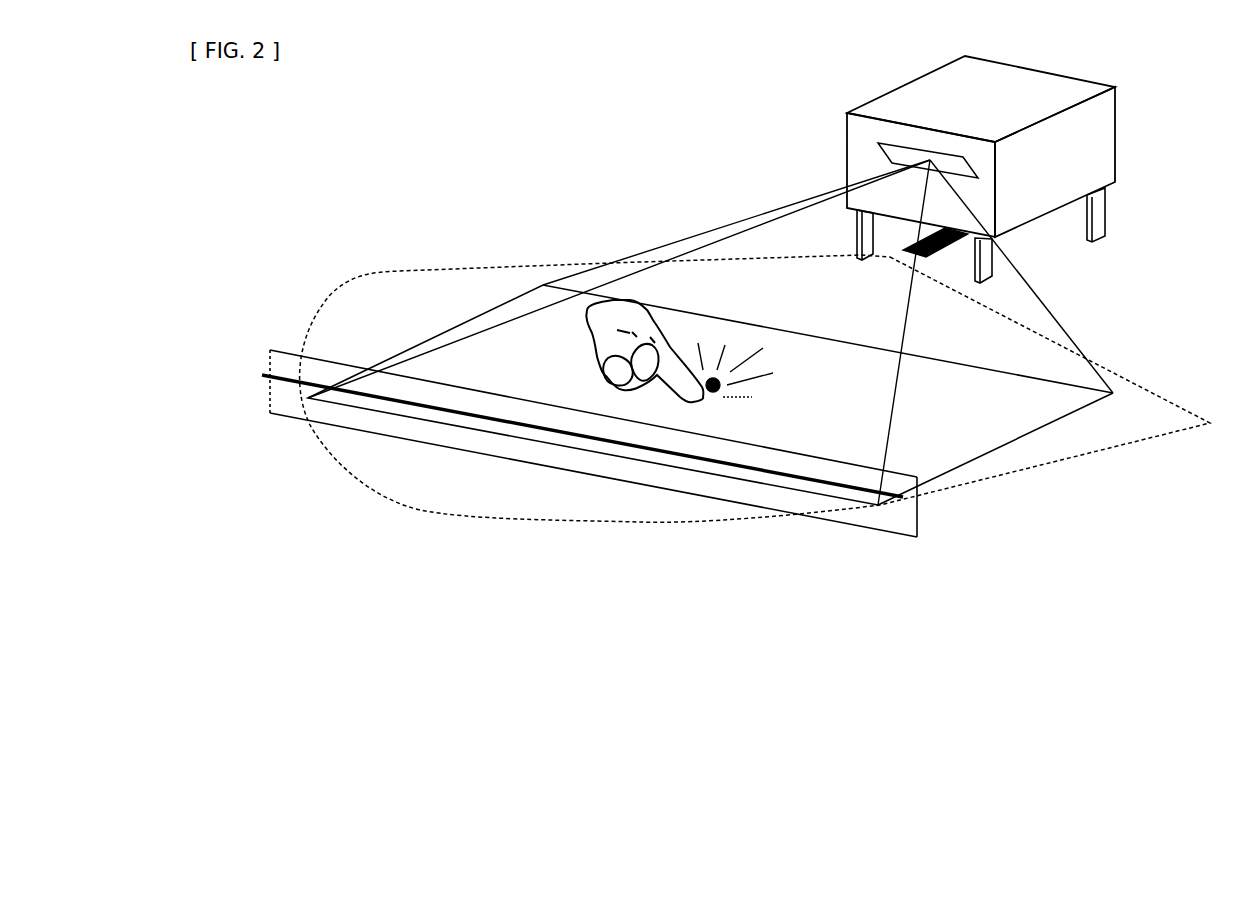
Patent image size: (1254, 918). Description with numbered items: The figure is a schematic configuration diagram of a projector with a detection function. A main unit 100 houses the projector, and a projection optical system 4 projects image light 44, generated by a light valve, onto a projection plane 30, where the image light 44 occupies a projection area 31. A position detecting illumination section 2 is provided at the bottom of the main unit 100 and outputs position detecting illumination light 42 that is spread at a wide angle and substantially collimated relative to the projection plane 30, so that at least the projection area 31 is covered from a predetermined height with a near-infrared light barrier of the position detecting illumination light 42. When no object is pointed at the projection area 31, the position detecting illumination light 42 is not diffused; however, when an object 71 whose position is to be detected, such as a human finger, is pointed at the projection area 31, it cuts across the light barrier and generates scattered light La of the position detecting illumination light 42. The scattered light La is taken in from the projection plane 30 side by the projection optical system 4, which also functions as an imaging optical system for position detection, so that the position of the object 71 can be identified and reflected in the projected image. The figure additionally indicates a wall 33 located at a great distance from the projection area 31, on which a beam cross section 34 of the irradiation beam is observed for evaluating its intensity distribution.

The main unit 100 is at (905, 85).
The projection optical system 4 is at (1083, 193).
The position detecting illumination section 2 is at (968, 236).
The image light 44 is at (733, 222).
The projection plane 30 is at (1047, 402).
The projection area 31 is at (973, 463).
The wall 33 is at (847, 524).
The beam cross section 34 is at (895, 498).
The position detecting illumination light 42 is at (450, 512).
The object whose position is to be detected 71 is at (677, 402).
The scattered light La is at (717, 397).